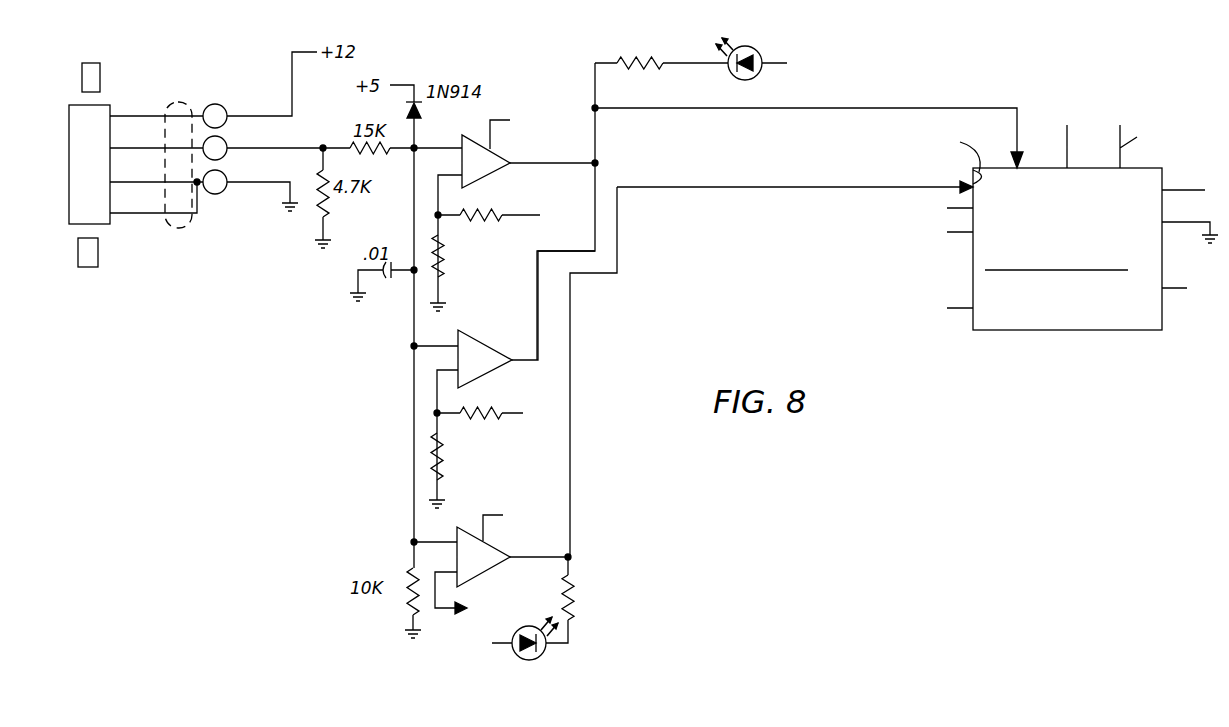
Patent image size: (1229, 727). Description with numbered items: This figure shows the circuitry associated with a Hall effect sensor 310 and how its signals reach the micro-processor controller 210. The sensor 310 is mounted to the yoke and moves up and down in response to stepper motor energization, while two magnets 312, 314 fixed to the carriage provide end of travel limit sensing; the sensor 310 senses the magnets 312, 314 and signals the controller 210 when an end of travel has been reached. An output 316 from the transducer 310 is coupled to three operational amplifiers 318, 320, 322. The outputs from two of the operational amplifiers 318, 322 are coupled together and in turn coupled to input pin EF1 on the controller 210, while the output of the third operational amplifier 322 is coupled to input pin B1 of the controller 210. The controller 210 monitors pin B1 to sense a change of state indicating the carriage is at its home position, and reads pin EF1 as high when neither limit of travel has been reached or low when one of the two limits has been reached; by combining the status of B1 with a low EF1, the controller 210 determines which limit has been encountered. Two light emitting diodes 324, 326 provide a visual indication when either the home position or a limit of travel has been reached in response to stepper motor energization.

The micro-processor controller 210 is at (1065, 320).
The Hall effect sensor 310 is at (75, 210).
The magnet 312 is at (92, 80).
The magnet 314 is at (95, 255).
The output 316 is at (253, 150).
The operational amplifier 318 is at (480, 158).
The operational amplifier 320 is at (478, 340).
The operational amplifier 322 is at (485, 545).
The light emitting diode 324 is at (545, 650).
The light emitting diode 326 is at (765, 58).